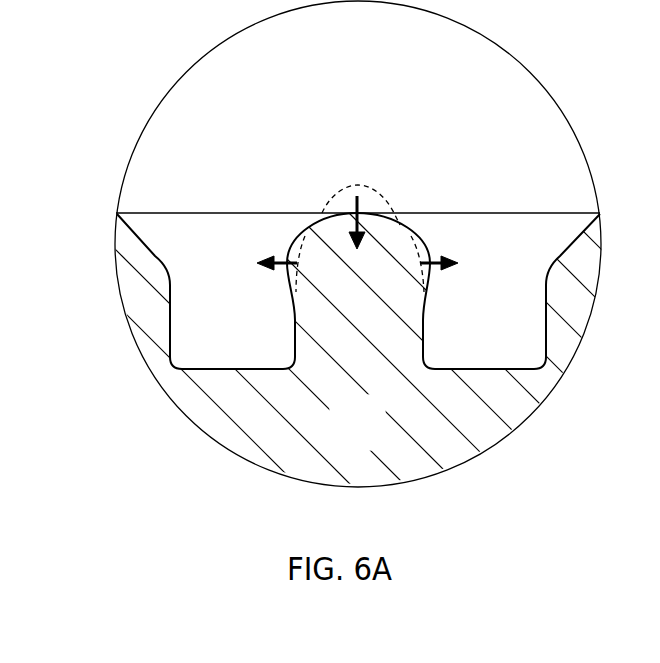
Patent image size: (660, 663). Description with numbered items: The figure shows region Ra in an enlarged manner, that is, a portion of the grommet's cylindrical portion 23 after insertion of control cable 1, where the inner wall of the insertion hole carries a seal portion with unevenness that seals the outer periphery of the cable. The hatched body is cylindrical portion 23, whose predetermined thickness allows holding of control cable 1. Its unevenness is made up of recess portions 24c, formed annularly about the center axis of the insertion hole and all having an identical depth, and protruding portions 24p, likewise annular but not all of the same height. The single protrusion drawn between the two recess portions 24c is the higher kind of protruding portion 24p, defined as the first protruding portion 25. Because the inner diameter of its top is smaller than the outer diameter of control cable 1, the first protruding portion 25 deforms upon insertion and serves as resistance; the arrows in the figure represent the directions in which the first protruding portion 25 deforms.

The region Ra is at (162, 98).
The control cable 1 is at (369, 86).
The cylindrical portion 23 is at (371, 436).
The recess portions 24c is at (234, 355).
The protruding portions 24p is at (347, 198).
The first protruding portion 25 is at (357, 207).